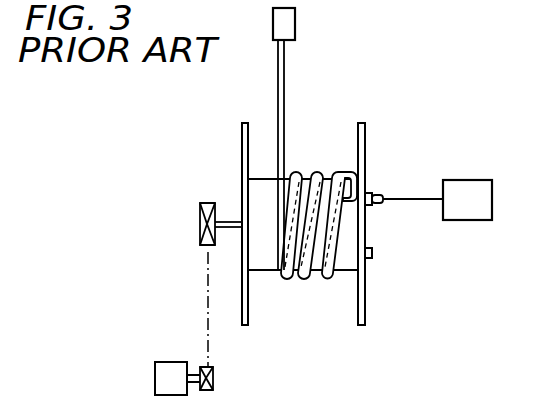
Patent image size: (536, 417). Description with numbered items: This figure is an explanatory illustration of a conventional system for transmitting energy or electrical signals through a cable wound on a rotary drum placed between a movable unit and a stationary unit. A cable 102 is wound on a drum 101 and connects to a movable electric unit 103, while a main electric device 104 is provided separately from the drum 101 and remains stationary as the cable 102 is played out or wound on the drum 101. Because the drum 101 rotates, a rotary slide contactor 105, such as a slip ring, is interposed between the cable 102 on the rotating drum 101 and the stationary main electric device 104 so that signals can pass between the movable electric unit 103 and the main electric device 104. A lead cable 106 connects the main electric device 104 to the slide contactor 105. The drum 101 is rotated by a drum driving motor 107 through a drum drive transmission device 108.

The drum 101 is at (267, 262).
The cable 102 is at (284, 95).
The movable electric unit 103 is at (287, 22).
The main electric device 104 is at (476, 198).
The rotary slide contactor 105 is at (378, 194).
The lead cable 106 is at (413, 202).
The drum driving motor 107 is at (155, 390).
The drum drive transmission device 108 is at (206, 270).